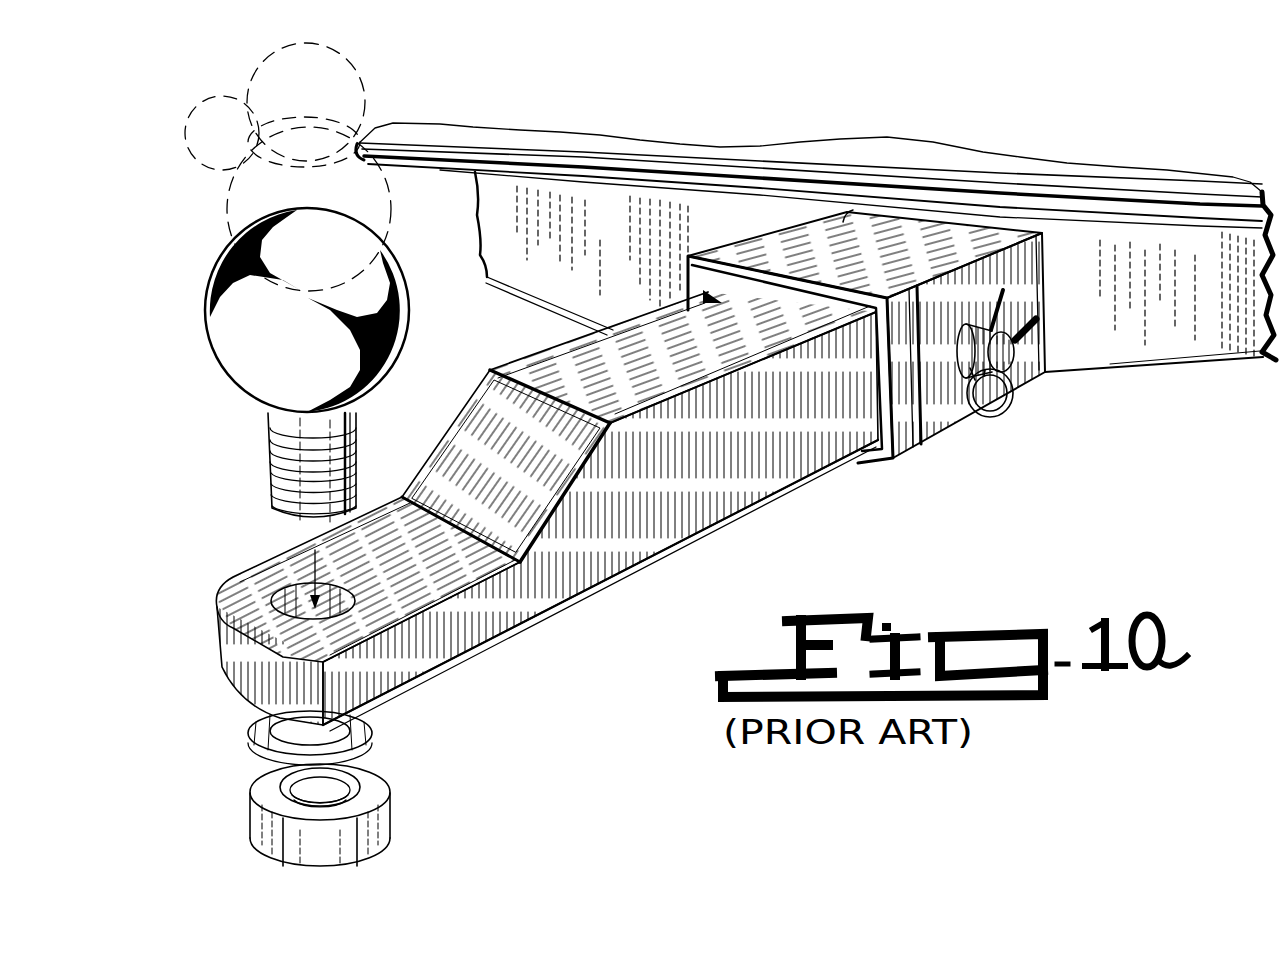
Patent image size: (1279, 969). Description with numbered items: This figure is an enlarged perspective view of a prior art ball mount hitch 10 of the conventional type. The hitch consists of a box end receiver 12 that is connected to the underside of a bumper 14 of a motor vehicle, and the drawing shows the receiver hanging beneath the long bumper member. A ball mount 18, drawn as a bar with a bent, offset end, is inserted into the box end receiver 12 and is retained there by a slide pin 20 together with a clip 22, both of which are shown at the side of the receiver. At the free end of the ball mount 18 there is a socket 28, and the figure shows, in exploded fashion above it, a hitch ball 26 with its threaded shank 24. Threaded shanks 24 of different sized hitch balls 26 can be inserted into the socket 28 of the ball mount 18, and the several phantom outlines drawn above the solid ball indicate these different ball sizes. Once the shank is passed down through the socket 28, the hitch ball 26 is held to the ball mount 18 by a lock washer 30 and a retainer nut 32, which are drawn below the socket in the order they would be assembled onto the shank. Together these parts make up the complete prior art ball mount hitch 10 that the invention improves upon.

The ball mount hitch 10 is at (842, 530).
The box end receiver 12 is at (1152, 347).
The bumper 14 is at (1052, 166).
The ball mount 18 is at (735, 487).
The slide pin 20 is at (1015, 320).
The clip 22 is at (987, 407).
The threaded shank 24 is at (292, 478).
The hitch ball 26 is at (208, 150).
The socket 28 is at (280, 590).
The lock washer 30 is at (250, 742).
The retainer nut 32 is at (393, 806).